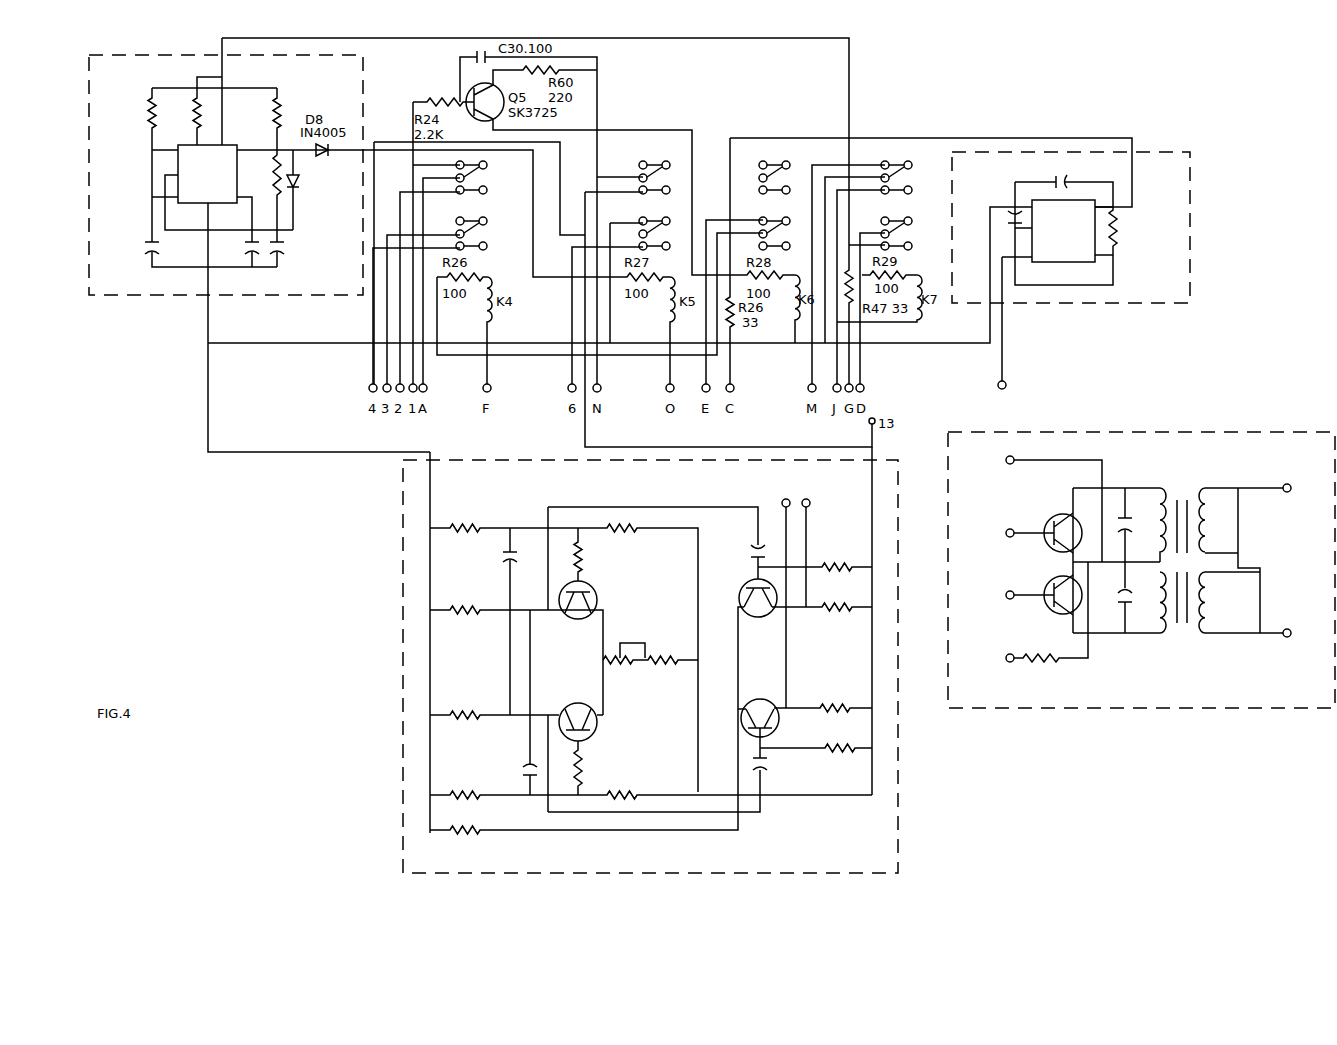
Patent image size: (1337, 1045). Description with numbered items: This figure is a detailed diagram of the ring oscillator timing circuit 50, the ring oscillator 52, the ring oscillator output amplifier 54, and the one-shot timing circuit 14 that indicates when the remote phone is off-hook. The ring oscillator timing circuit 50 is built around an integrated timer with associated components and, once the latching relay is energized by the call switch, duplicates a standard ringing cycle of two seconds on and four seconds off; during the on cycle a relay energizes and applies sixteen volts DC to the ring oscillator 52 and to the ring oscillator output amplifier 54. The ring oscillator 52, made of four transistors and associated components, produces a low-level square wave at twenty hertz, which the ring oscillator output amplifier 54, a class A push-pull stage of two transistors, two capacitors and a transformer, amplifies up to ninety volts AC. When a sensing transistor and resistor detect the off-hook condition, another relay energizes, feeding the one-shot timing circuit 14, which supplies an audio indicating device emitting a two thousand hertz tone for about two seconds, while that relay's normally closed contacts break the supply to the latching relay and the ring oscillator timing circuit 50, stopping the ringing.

The ring oscillator timing circuit 50 is at (130, 278).
The ring oscillator 52 is at (407, 657).
The ring oscillator output amplifier 54 is at (1128, 440).
The one-shot timing circuit 14 is at (1157, 268).